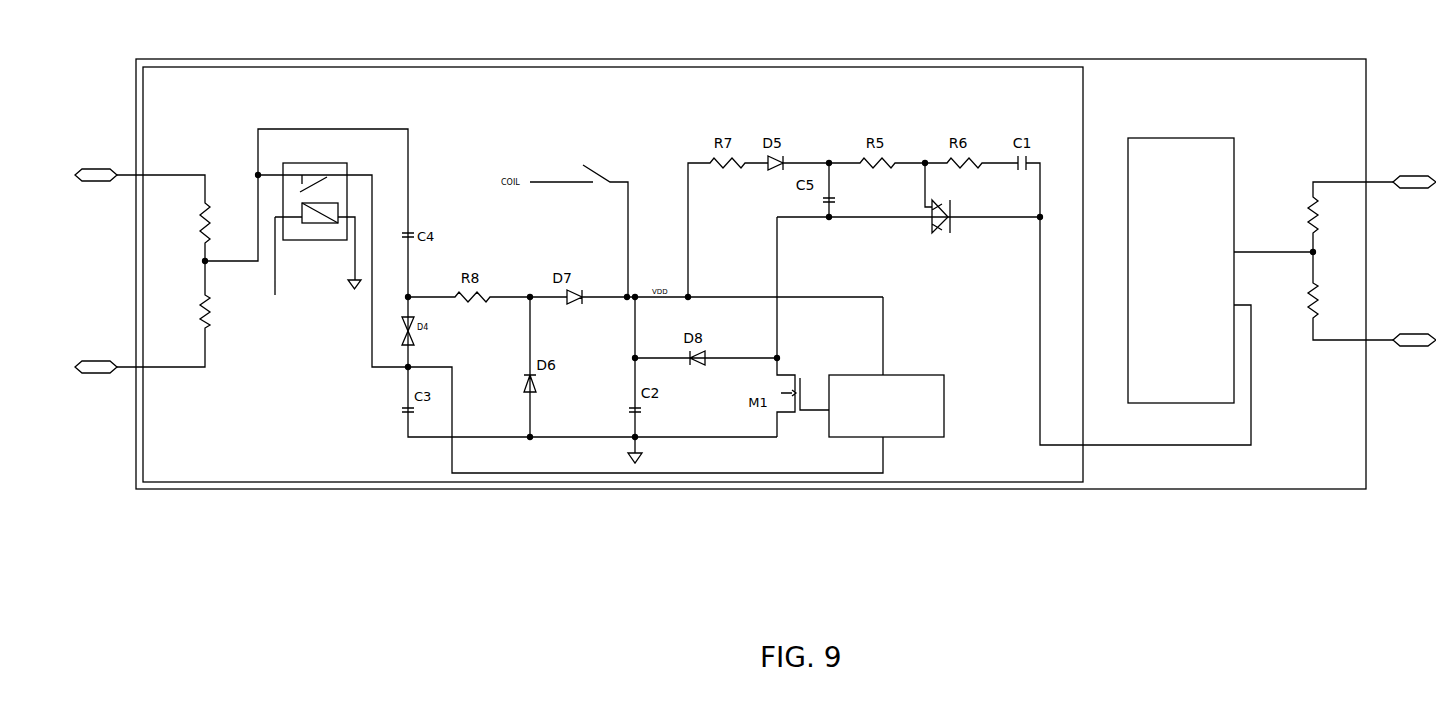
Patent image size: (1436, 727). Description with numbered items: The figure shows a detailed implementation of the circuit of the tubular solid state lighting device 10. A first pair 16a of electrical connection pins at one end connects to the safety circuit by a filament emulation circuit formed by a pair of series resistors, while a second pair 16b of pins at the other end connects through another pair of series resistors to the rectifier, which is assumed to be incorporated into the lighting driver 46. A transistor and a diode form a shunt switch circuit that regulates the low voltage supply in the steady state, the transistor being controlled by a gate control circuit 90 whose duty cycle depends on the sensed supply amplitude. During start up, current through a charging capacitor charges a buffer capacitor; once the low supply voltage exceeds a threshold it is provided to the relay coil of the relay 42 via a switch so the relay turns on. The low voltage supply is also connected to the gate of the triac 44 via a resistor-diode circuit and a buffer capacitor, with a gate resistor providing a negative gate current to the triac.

The tubular solid state lighting device 10 is at (336, 492).
The first pair of electrical connection pins 16a is at (120, 403).
The second pair of electrical connection pins 16b is at (1383, 158).
The relay 42 is at (310, 153).
The transient voltage suppressor 44 is at (943, 236).
The lighting driver 46 is at (1158, 138).
The gate control circuit 90 is at (944, 410).